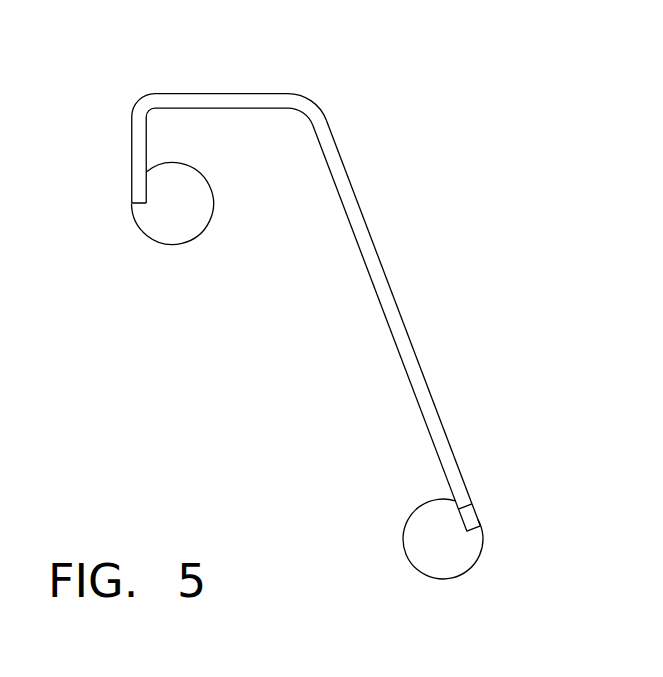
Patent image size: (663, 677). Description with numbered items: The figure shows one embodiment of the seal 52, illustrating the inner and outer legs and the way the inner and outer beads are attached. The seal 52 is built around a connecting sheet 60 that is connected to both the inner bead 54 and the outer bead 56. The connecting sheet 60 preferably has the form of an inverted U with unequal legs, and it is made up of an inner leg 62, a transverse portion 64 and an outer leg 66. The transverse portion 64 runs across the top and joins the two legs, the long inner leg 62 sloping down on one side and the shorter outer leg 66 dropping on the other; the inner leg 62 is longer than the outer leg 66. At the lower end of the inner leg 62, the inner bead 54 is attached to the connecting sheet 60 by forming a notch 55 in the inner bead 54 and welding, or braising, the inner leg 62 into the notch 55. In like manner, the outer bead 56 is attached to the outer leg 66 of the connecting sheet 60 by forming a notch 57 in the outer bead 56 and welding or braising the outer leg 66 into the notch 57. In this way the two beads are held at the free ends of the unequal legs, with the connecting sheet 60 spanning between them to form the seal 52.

The seal 52 is at (363, 348).
The inner bead 54 is at (468, 555).
The notch 55 is at (472, 505).
The outer bead 56 is at (180, 227).
The notch 57 is at (146, 184).
The connecting sheet 60 is at (360, 210).
The inner leg 62 is at (436, 407).
The transverse portion 64 is at (225, 94).
The outer leg 66 is at (132, 154).